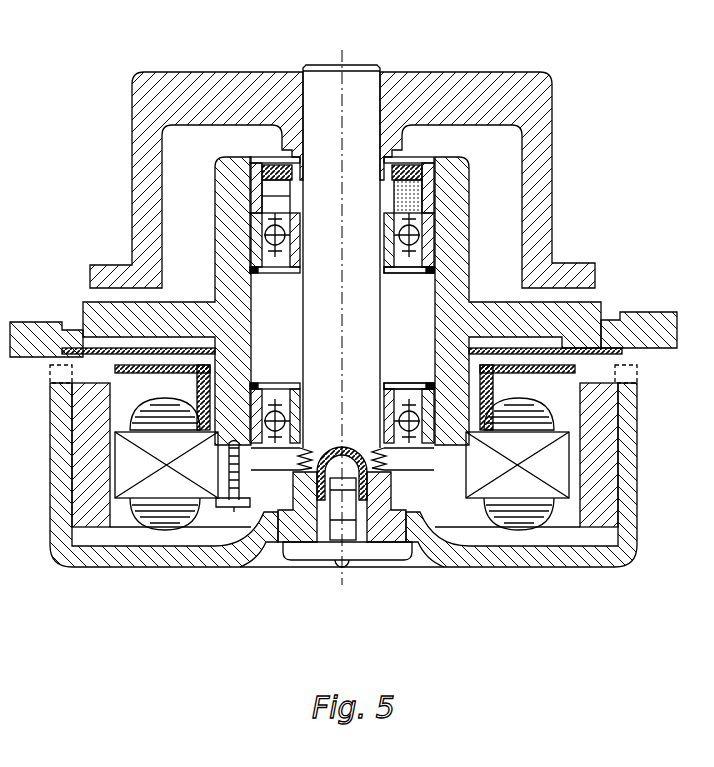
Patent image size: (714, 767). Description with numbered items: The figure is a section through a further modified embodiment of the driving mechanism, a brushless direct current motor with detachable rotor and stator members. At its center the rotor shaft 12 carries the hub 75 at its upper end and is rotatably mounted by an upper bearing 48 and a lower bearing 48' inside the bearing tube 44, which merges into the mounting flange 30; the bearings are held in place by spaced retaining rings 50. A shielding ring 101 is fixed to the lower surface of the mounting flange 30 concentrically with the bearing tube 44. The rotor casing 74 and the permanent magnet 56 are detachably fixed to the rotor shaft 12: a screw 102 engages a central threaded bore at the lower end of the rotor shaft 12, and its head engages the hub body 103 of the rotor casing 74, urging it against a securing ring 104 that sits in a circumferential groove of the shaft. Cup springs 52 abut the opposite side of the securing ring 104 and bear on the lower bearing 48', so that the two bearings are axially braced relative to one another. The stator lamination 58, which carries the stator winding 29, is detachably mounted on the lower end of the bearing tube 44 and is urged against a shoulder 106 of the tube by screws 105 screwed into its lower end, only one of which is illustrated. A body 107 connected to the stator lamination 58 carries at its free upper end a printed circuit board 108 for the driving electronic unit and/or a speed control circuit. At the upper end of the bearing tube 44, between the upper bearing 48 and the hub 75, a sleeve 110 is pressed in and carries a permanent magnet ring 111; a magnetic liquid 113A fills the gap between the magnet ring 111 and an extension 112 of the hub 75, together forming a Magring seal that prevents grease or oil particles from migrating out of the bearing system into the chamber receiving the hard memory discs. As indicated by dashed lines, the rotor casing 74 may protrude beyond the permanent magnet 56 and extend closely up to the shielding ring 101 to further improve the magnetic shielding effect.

The rotor shaft 12 is at (365, 331).
The stator winding 29 is at (550, 505).
The mounting flange 30 is at (660, 335).
The bearing tube 44 is at (243, 309).
The upper bearing 48 is at (383, 218).
The lower bearing 48' is at (342, 391).
The retaining ring 50 is at (437, 270).
The cup spring 52 is at (390, 452).
The permanent magnet 56 is at (607, 457).
The stator lamination 58 is at (573, 473).
The rotor casing 74 is at (630, 436).
The hub 75 is at (540, 107).
The shielding ring 101 is at (603, 345).
The screw 102 is at (326, 552).
The hub body 103 is at (420, 532).
The securing ring 104 is at (306, 452).
The screw 105 is at (218, 505).
The shoulder 106 is at (200, 413).
The body 107 is at (567, 417).
The printed circuit board 108 is at (125, 368).
The sleeve 110 is at (434, 182).
The permanent magnet ring 111 is at (283, 170).
The extension 112 is at (267, 195).
The magnetic liquid 113A is at (408, 165).